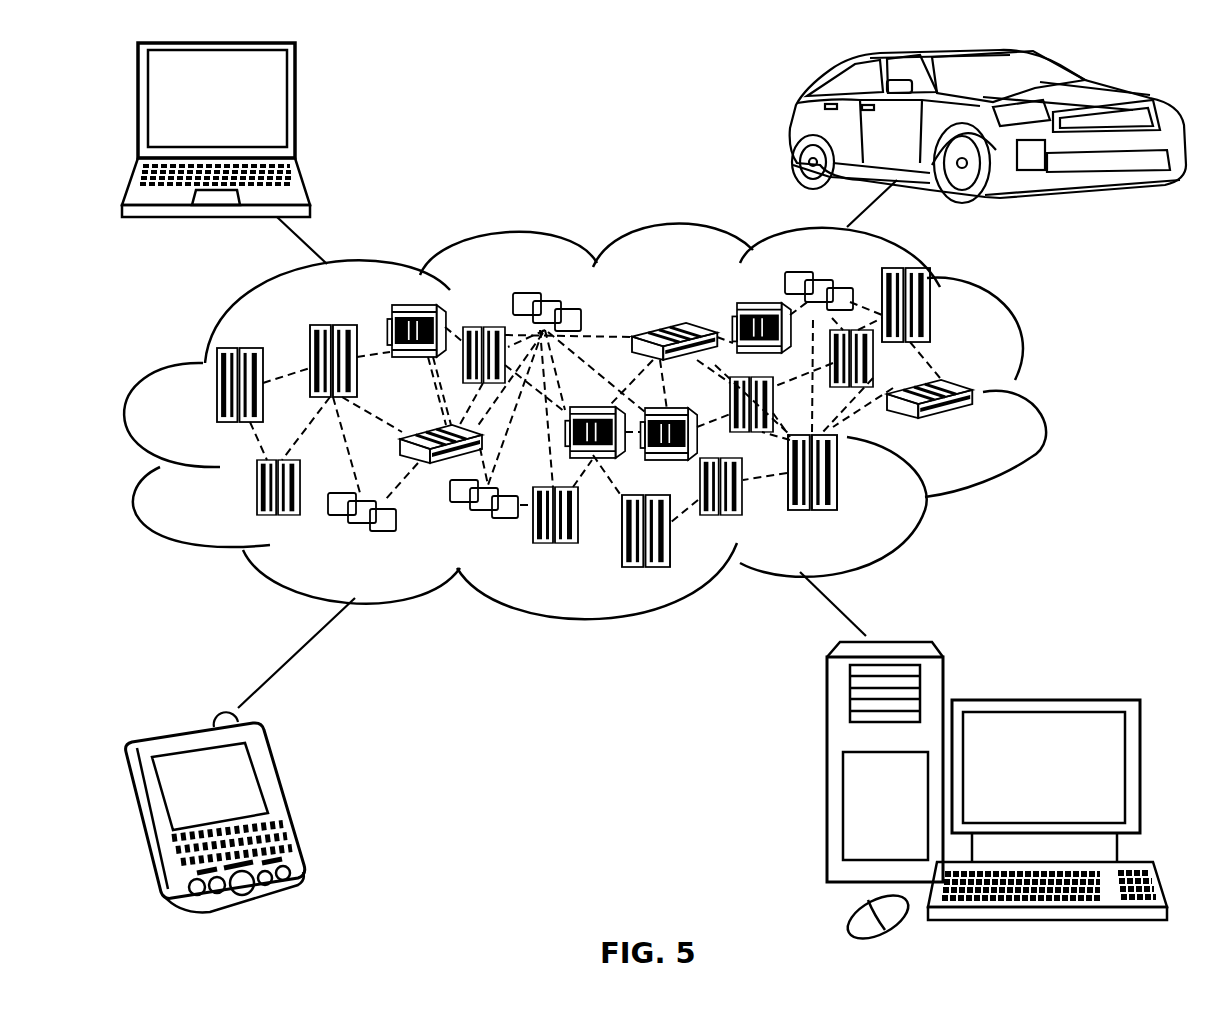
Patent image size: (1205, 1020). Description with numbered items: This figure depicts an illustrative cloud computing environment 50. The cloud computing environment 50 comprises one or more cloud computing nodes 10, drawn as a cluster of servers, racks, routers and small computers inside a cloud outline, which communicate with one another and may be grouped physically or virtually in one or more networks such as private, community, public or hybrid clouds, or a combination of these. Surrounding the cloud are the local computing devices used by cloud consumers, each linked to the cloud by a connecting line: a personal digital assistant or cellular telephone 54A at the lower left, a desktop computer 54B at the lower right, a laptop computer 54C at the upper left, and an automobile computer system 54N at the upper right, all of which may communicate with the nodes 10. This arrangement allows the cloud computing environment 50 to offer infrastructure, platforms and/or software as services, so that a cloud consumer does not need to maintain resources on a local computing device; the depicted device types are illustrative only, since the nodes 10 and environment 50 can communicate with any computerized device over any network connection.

The cloud computing nodes 10 is at (992, 436).
The cloud computing environment 50 is at (1042, 395).
The personal digital assistant or cellular telephone 54A is at (283, 802).
The desktop computer 54B is at (1042, 700).
The laptop computer 54C is at (295, 110).
The automobile computer system 54N is at (797, 125).